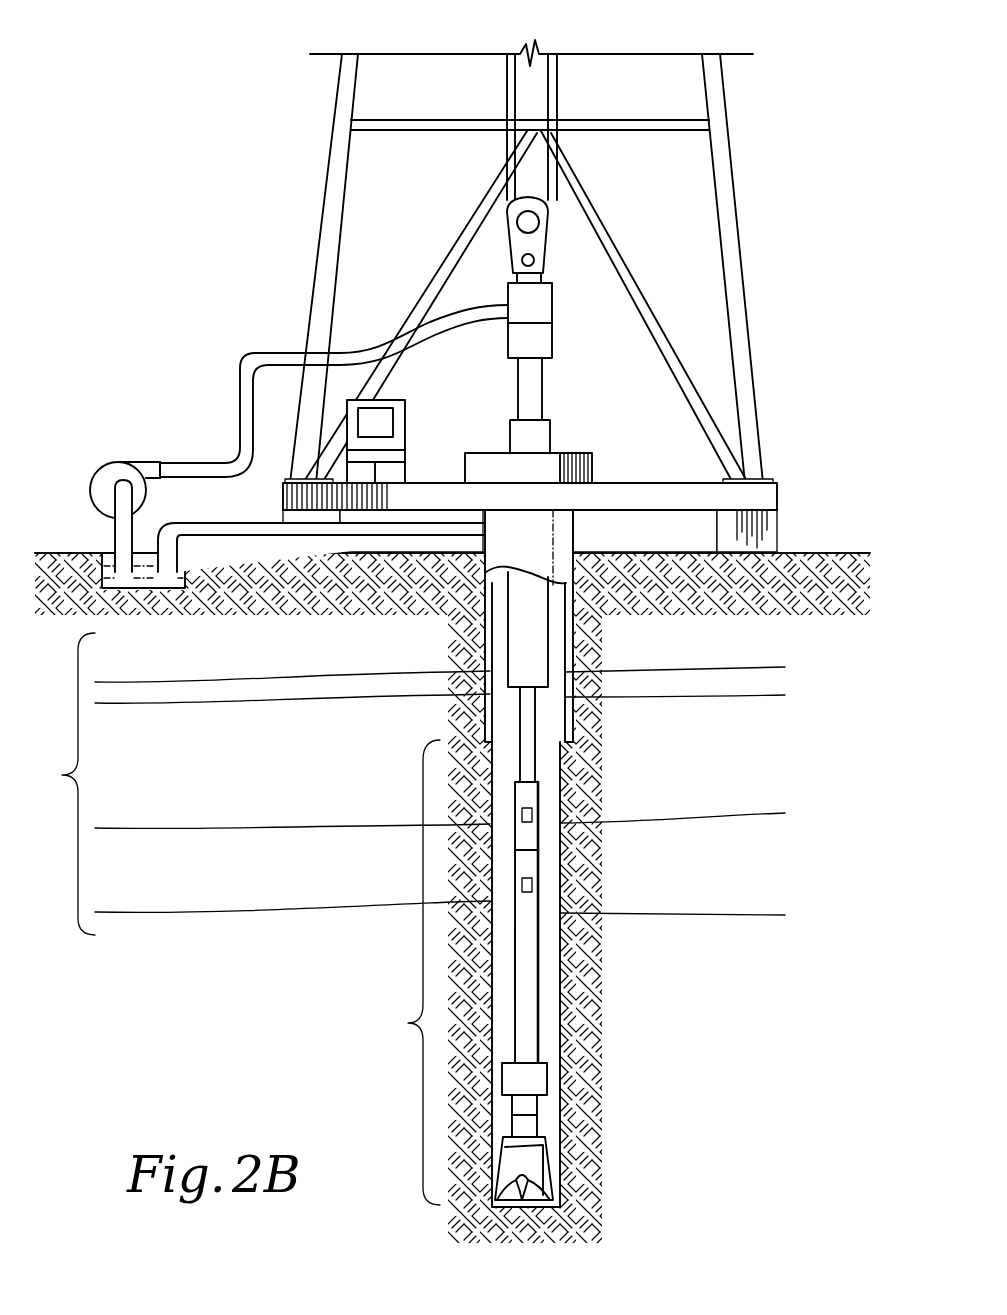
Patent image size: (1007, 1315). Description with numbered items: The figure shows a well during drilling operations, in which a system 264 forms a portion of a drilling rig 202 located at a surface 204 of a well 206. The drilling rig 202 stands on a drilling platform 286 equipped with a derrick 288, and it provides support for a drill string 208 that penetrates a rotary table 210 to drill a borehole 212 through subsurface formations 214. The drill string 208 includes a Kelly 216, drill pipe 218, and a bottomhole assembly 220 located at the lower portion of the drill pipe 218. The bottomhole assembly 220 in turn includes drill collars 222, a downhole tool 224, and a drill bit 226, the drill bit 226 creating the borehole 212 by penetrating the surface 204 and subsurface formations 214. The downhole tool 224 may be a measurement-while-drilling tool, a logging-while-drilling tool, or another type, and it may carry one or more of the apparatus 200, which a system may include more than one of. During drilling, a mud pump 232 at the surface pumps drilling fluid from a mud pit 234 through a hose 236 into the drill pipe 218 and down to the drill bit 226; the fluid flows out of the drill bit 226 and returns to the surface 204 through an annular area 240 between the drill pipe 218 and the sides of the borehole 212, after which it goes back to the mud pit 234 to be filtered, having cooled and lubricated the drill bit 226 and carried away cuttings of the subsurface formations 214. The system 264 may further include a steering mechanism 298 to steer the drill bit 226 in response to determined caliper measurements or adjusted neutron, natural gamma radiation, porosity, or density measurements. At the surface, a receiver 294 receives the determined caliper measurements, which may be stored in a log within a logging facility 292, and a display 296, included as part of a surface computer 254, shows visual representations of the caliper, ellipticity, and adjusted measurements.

The system 264 is at (221, 184).
The derrick 288 is at (735, 191).
The drilling rig 202 is at (483, 261).
The Kelly 216 is at (545, 373).
The rotary table 210 is at (493, 451).
The logging facility 292 is at (405, 420).
The surface computer 254 is at (406, 418).
The display 296 is at (394, 428).
The receiver 294 is at (396, 473).
The mud pump 232 is at (122, 460).
The hose 236 is at (238, 415).
The mud pit 234 is at (145, 590).
The drilling platform 286 is at (780, 489).
The well 206 is at (585, 541).
The surface 204 is at (790, 553).
The drill pipe 218 is at (547, 650).
The drill collars 222 is at (529, 762).
The annular area 240 is at (552, 785).
The apparatus 200 is at (533, 810).
The downhole tool 224 is at (528, 865).
The drill string 208 is at (543, 937).
The borehole 212 is at (557, 1053).
The steering mechanism 298 is at (537, 1080).
The drill bit 226 is at (537, 1165).
The subsurface formations 214 is at (398, 784).
The bottomhole assembly 220 is at (480, 898).